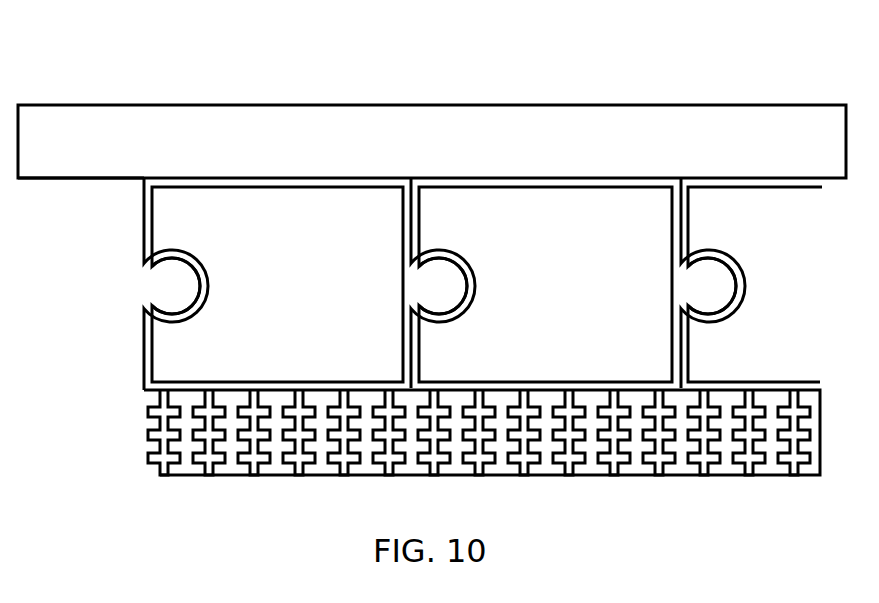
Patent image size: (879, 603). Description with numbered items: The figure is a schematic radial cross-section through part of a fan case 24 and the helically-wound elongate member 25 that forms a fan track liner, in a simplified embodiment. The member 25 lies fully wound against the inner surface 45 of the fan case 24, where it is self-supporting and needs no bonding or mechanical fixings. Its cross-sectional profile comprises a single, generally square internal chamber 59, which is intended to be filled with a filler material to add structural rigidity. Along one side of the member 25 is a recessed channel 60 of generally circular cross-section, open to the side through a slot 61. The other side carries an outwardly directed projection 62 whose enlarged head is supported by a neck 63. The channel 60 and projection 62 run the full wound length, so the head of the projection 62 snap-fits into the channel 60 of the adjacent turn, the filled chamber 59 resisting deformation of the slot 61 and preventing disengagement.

The fan case 24 is at (132, 127).
The inner surface 45 is at (78, 180).
The slot 61 is at (145, 280).
The recessed channel 60 is at (166, 292).
The internal chamber 59 is at (306, 302).
The neck 63 is at (416, 290).
The projection 62 is at (445, 290).
The member 25 is at (112, 384).